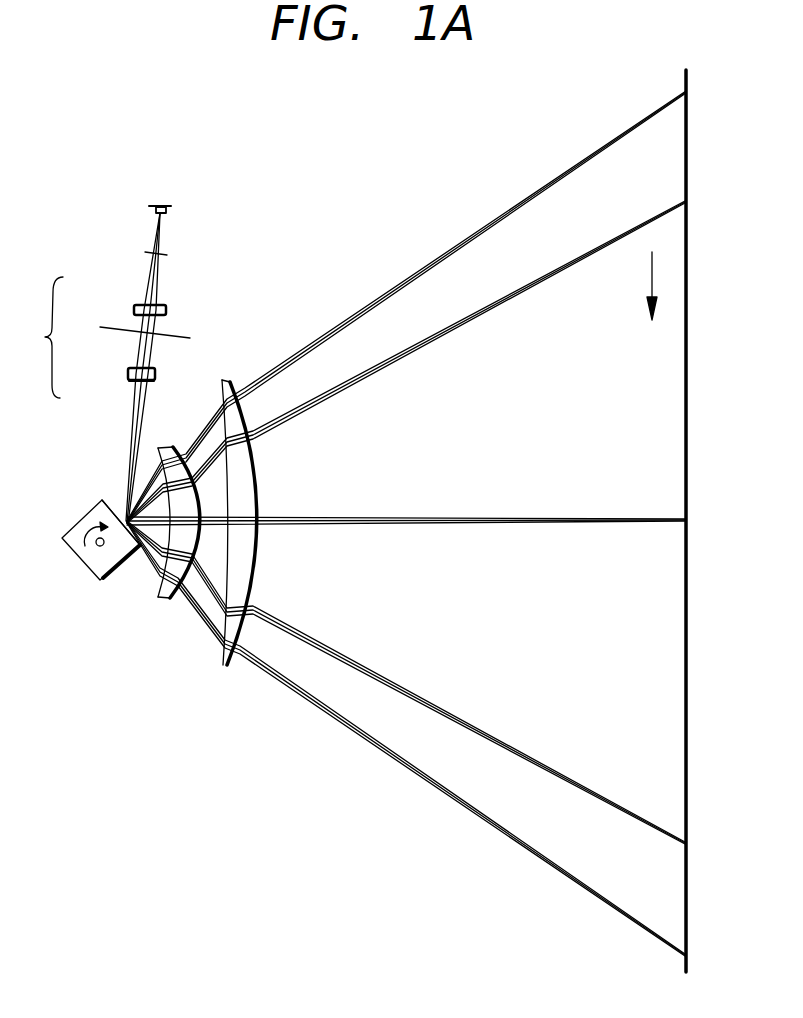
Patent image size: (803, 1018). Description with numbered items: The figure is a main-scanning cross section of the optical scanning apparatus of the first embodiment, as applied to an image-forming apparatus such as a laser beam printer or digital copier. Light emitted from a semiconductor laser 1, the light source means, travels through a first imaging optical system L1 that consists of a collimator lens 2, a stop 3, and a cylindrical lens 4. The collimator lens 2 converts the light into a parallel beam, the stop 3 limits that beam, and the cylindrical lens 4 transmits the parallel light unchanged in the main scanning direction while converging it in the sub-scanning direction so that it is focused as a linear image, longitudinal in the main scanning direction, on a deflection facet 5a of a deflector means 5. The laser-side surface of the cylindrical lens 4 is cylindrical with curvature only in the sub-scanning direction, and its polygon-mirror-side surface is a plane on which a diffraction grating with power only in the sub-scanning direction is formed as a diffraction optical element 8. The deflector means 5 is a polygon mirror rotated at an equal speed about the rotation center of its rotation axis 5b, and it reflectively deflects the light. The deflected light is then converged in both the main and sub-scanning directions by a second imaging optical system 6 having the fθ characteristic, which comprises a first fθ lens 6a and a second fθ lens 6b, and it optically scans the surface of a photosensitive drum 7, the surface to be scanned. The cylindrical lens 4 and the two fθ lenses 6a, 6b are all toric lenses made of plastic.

The semiconductor laser 1 is at (155, 206).
The collimator lens 2 is at (134, 308).
The stop 3 is at (100, 328).
The cylindrical lens 4 is at (128, 372).
The diffraction optical element 8 is at (137, 381).
The first imaging optical system L1 is at (41, 337).
The deflector means 5 is at (70, 548).
The deflection facet 5a is at (113, 500).
The rotation axis 5b is at (104, 550).
The second imaging optical system 6 is at (197, 558).
The first fθ lens 6a is at (165, 600).
The second fθ lens 6b is at (232, 551).
The photosensitive drum 7 is at (688, 410).